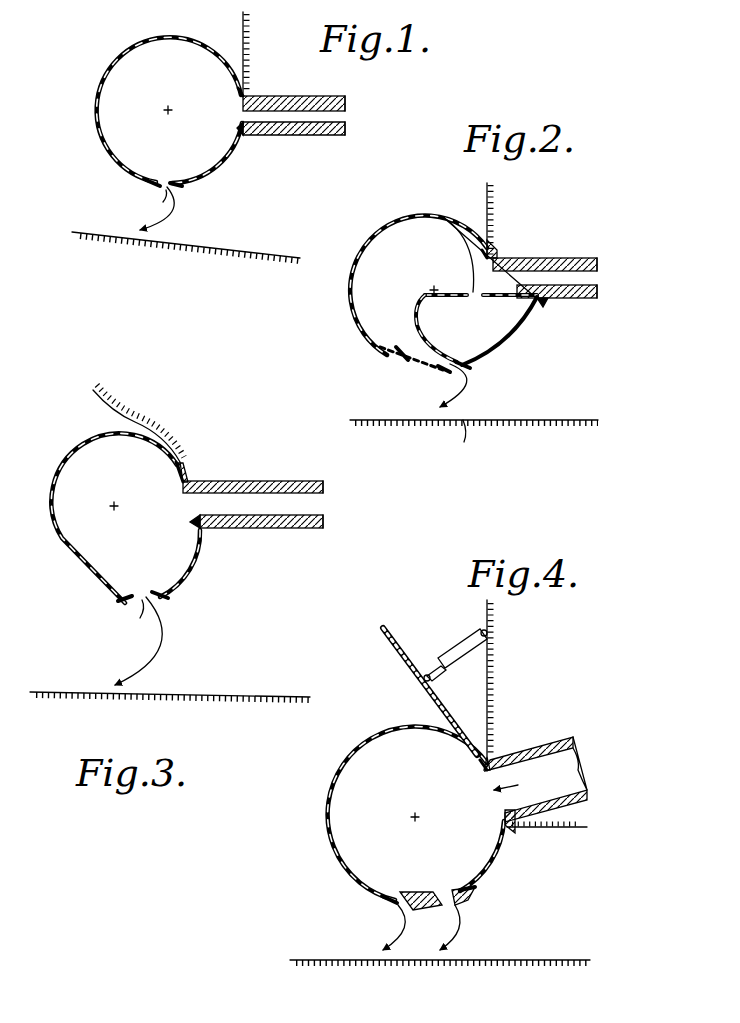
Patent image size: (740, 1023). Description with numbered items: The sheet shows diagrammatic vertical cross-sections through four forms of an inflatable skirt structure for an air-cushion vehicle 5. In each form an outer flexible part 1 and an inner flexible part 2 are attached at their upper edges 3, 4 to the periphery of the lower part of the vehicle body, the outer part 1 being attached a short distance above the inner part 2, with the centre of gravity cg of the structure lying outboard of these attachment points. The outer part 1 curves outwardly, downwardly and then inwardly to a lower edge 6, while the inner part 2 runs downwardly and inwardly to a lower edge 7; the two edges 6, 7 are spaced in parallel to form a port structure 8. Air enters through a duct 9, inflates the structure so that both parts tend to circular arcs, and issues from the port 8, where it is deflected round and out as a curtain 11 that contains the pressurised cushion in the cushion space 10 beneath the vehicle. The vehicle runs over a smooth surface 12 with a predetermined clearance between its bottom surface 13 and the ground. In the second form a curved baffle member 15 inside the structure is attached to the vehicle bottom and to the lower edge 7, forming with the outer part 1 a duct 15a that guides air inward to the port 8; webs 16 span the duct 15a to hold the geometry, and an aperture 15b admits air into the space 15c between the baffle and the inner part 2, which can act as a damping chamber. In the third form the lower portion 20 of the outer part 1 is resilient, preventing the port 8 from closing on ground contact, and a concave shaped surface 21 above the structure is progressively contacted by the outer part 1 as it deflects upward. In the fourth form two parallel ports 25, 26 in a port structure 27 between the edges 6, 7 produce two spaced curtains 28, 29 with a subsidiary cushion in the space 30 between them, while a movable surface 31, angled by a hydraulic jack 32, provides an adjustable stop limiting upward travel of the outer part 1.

In FIG. 1, the outer flexible part 1 is at (97, 104).
In FIG. 2, the outer flexible part 1 is at (350, 261).
In FIG. 3, the outer flexible part 1 is at (64, 459).
In FIG. 4, the outer flexible part 1 is at (354, 752).
In FIG. 1, the inner flexible part 2 is at (229, 158).
In FIG. 2, the inner flexible part 2 is at (510, 336).
In FIG. 3, the inner flexible part 2 is at (203, 558).
In FIG. 4, the inner flexible part 2 is at (496, 875).
In FIG. 1, the upper edge of outer flexible part 3 is at (240, 95).
In FIG. 2, the upper edge of outer flexible part 3 is at (486, 250).
In FIG. 3, the upper edge of outer flexible part 3 is at (175, 470).
In FIG. 4, the upper edge of outer flexible part 3 is at (484, 770).
In FIG. 1, the upper edge of inner flexible part 4 is at (237, 128).
In FIG. 2, the upper edge of inner flexible part 4 is at (542, 308).
In FIG. 3, the upper edge of inner flexible part 4 is at (190, 524).
In FIG. 4, the upper edge of inner flexible part 4 is at (505, 829).
In FIG. 1, the vehicle 5 is at (283, 70).
In FIG. 2, the vehicle 5 is at (541, 236).
In FIG. 3, the vehicle 5 is at (233, 451).
In FIG. 4, the vehicle 5 is at (536, 692).
In FIG. 1, the lower edge of outer flexible part 6 is at (150, 184).
In FIG. 2, the lower edge of outer flexible part 6 is at (444, 375).
In FIG. 3, the lower edge of outer flexible part 6 is at (124, 610).
In FIG. 4, the lower edge of outer flexible part 6 is at (385, 903).
In FIG. 1, the lower edge of inner flexible part 7 is at (180, 188).
In FIG. 2, the lower edge of inner flexible part 7 is at (470, 370).
In FIG. 3, the lower edge of inner flexible part 7 is at (166, 596).
In FIG. 4, the lower edge of inner flexible part 7 is at (472, 895).
In FIG. 1, the port structure 8 is at (160, 192).
In FIG. 2, the port structure 8 is at (472, 385).
In FIG. 3, the port structure 8 is at (135, 622).
In FIG. 1, the duct 9 is at (305, 131).
In FIG. 2, the duct 9 is at (576, 299).
In FIG. 3, the duct 9 is at (289, 529).
In FIG. 4, the duct 9 is at (566, 782).
In FIG. 1, the cushion space 10 is at (300, 216).
In FIG. 2, the cushion space 10 is at (582, 376).
In FIG. 3, the cushion space 10 is at (264, 622).
In FIG. 4, the cushion space 10 is at (558, 876).
In FIG. 1, the curtain 11 is at (172, 216).
In FIG. 2, the curtain 11 is at (473, 440).
In FIG. 3, the curtain 11 is at (166, 658).
In FIG. 1, the surface 12 is at (228, 246).
In FIG. 2, the surface 12 is at (553, 418).
In FIG. 3, the surface 12 is at (270, 700).
In FIG. 4, the surface 12 is at (563, 957).
In FIG. 1, the bottom surface of the vehicle 13 is at (341, 135).
In FIG. 2, the bottom surface of the vehicle 13 is at (598, 299).
In FIG. 3, the bottom surface of the vehicle 13 is at (324, 529).
In FIG. 4, the bottom surface of the vehicle 13 is at (582, 829).
In FIG. 2, the curved baffle member 15 is at (418, 308).
In FIG. 2, the duct 15a is at (398, 350).
In FIG. 2, the aperture 15b is at (442, 216).
In FIG. 2, the space 15c is at (474, 330).
In FIG. 2, the webs 16 is at (420, 372).
In FIG. 3, the lower portion of outer flexible part 20 is at (100, 588).
In FIG. 3, the shaped surface 21 is at (104, 413).
In FIG. 4, the port 25 is at (392, 932).
In FIG. 4, the port 26 is at (470, 900).
In FIG. 4, the port structure 27 is at (415, 892).
In FIG. 4, the curtain 28 is at (398, 932).
In FIG. 4, the curtain 29 is at (462, 932).
In FIG. 4, the space 30 is at (441, 929).
In FIG. 4, the movable surface 31 is at (424, 678).
In FIG. 4, the hydraulic jack 32 is at (460, 643).
In FIG. 1, the centre of gravity cg is at (155, 101).
In FIG. 2, the centre of gravity cg is at (433, 280).
In FIG. 3, the centre of gravity cg is at (129, 517).
In FIG. 4, the centre of gravity cg is at (432, 816).